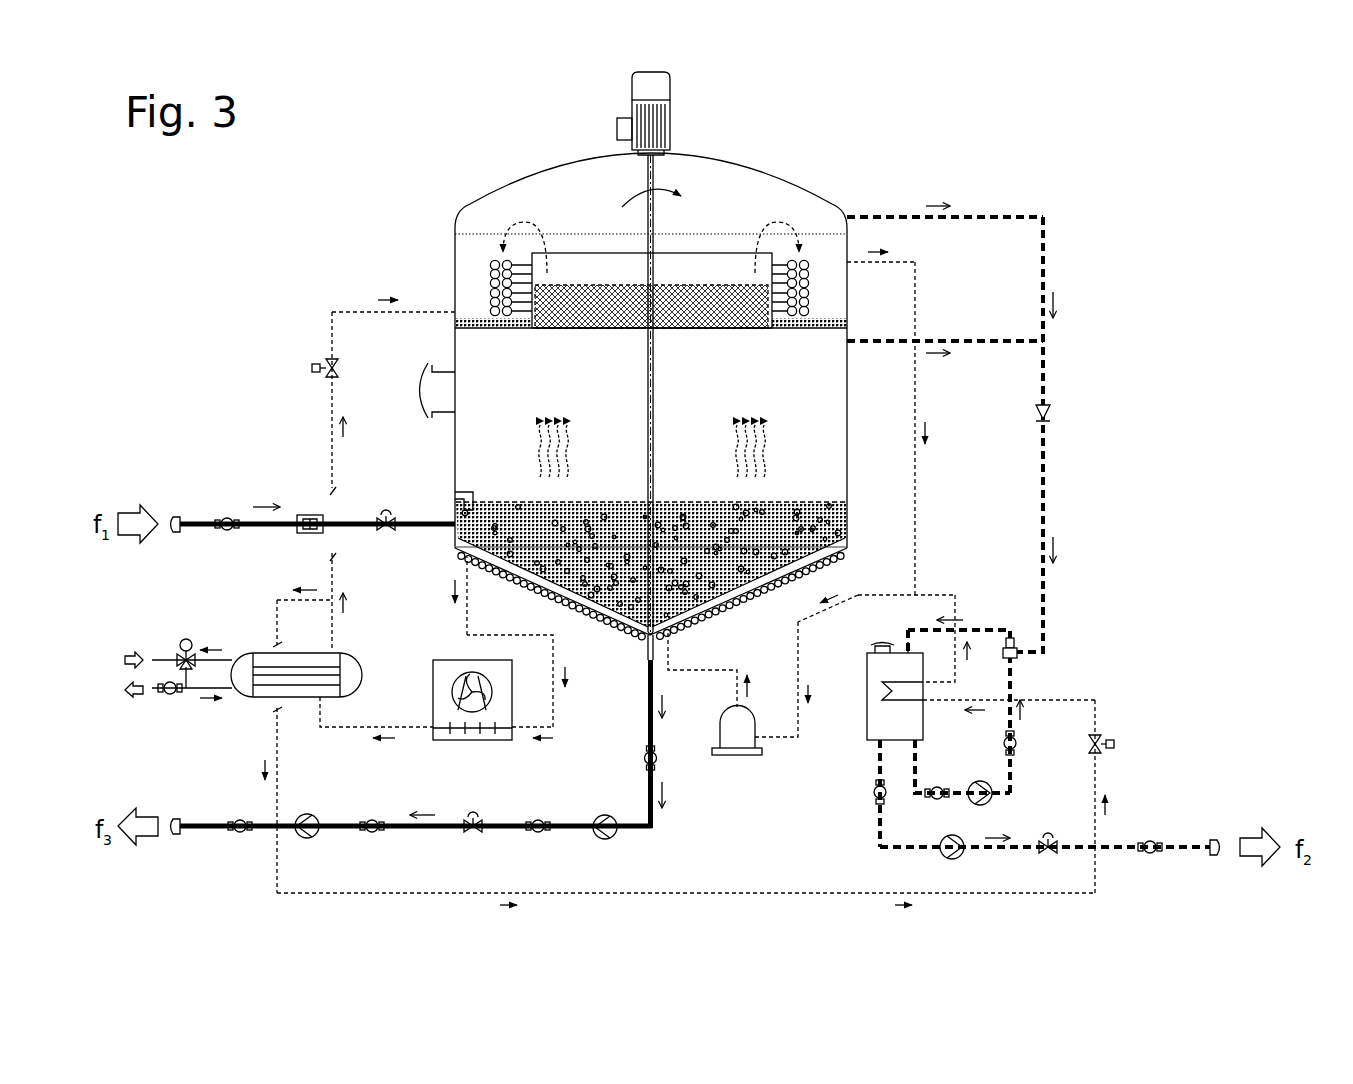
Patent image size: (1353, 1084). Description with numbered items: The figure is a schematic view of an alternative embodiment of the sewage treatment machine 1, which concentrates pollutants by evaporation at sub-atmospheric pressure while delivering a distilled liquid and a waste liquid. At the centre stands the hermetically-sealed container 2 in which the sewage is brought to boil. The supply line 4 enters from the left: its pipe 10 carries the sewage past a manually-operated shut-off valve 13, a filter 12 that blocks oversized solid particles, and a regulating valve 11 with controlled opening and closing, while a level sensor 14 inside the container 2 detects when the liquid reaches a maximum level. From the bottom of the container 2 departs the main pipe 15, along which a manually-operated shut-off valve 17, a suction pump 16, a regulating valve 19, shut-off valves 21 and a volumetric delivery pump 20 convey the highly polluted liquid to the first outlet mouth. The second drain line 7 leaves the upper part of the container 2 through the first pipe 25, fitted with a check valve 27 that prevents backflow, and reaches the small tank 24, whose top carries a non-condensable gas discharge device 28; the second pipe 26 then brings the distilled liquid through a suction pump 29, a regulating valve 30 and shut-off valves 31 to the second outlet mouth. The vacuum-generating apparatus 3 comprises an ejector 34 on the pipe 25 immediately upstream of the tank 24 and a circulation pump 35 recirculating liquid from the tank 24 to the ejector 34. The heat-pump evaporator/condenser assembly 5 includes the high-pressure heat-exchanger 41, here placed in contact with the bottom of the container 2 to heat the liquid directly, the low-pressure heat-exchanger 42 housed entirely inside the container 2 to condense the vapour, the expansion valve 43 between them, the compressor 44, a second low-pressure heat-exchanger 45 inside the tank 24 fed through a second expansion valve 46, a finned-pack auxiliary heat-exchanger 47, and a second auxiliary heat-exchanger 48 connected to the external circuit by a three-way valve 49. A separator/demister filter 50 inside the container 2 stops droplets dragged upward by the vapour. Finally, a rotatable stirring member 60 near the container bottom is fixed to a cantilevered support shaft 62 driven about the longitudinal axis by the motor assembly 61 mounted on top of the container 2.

The sewage treatment machine 1 is at (1209, 104).
The container 2 is at (519, 176).
The vacuum-generating apparatus 3 is at (1036, 731).
The supply line 4 is at (297, 495).
The heat-pump evaporator/condenser assembly 5 is at (328, 306).
The second drain line 7 is at (1050, 217).
The pipe 10 is at (190, 528).
The regulating valve 11 is at (388, 531).
The filter 12 is at (304, 533).
The manually-operated shut-off valve 13 is at (226, 517).
The level sensor 14 is at (464, 494).
The main pipe 15 is at (648, 700).
The suction pump 16 is at (605, 840).
The manually-operated shut-off valve 17 is at (644, 757).
The regulating valve 19 is at (473, 834).
The delivery pump 20 is at (307, 839).
The manually-operated shut-off valves 21 is at (240, 818).
The small tank 24 is at (867, 725).
The first pipe 25 is at (1010, 215).
The second pipe 26 is at (876, 847).
The check valve 27 is at (1050, 413).
The non-condensable gas discharge device 28 is at (880, 640).
The suction pump 29 is at (952, 860).
The regulating valve 30 is at (1050, 855).
The shut-off valves 31 is at (873, 793).
The ejector 34 is at (1014, 655).
The circulation pump 35 is at (979, 781).
The first heat-exchanger 41 is at (553, 597).
The second heat-exchanger 42 is at (490, 262).
The expansion valve 43 is at (312, 368).
The compressor 44 is at (745, 740).
The second low-pressure heat-exchanger 45 is at (882, 690).
The second expansion valve 46 is at (1114, 744).
The auxiliary heat-exchanger 47 is at (472, 741).
The second auxiliary heat-exchanger 48 is at (350, 665).
The three-way valve 49 is at (173, 653).
The separator/demister filter 50 is at (703, 298).
The rotatable stirring member 60 is at (525, 567).
The motor assembly 61 is at (630, 83).
The support shaft 62 is at (646, 383).